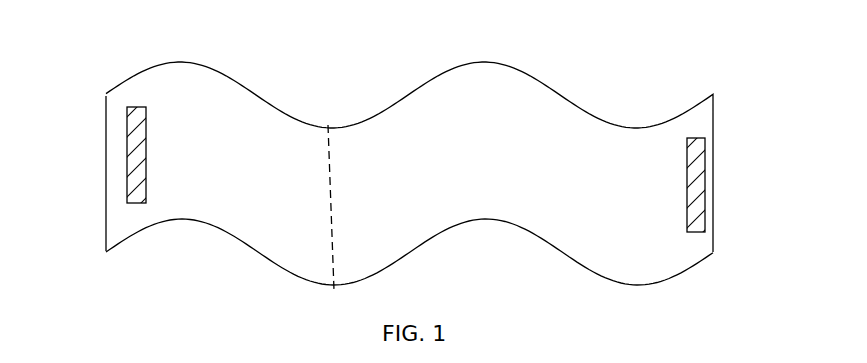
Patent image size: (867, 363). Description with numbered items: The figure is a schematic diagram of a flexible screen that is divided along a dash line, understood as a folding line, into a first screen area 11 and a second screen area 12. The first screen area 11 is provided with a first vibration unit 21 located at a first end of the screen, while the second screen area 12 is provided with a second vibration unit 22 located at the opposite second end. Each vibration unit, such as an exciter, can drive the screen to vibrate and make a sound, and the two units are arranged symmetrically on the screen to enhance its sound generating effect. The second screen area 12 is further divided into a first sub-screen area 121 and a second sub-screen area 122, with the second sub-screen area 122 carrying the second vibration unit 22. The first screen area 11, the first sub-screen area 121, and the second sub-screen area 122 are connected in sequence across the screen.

The first screen area 11 is at (198, 63).
The second screen area 12 is at (562, 159).
The first sub-screen area 121 is at (447, 70).
The second sub-screen area 122 is at (697, 108).
The first vibration unit 21 is at (133, 145).
The second vibration unit 22 is at (703, 181).